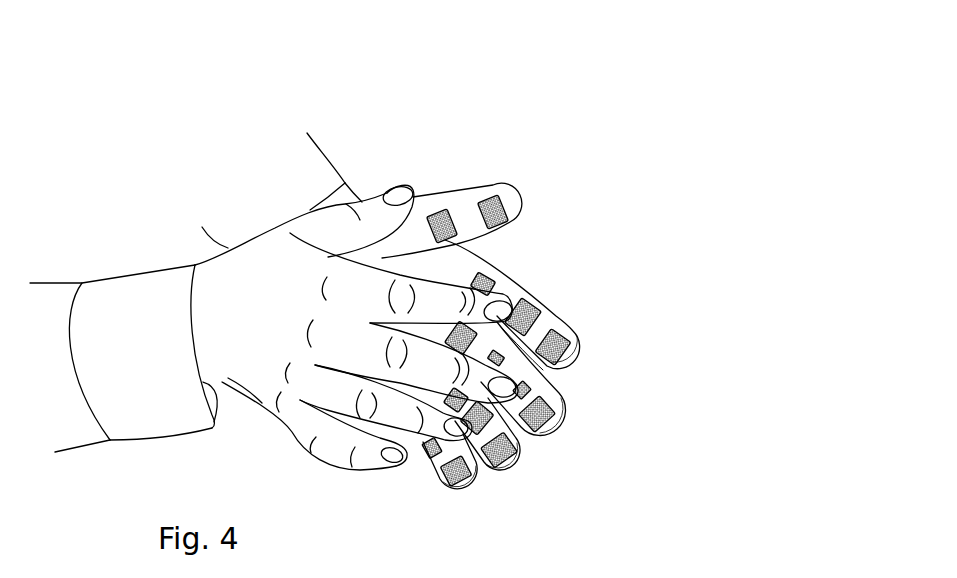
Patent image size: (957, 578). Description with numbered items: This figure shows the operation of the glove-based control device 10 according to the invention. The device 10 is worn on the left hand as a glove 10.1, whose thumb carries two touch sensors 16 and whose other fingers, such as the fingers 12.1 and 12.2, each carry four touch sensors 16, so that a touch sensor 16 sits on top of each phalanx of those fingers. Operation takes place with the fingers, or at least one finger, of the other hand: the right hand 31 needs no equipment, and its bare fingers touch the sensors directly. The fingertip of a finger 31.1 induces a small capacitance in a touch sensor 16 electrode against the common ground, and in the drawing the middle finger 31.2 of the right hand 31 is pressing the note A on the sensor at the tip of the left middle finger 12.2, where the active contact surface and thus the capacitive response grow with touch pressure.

The device 10 is at (515, 277).
The glove 10.1 is at (565, 194).
The first finger 12.1 is at (558, 330).
The middle finger of the left hand 12.2 is at (543, 428).
The touch sensor 16 is at (560, 358).
The right hand 31 is at (308, 320).
The finger of the right hand 31.1 is at (437, 300).
The middle finger of the right hand 31.2 is at (430, 367).